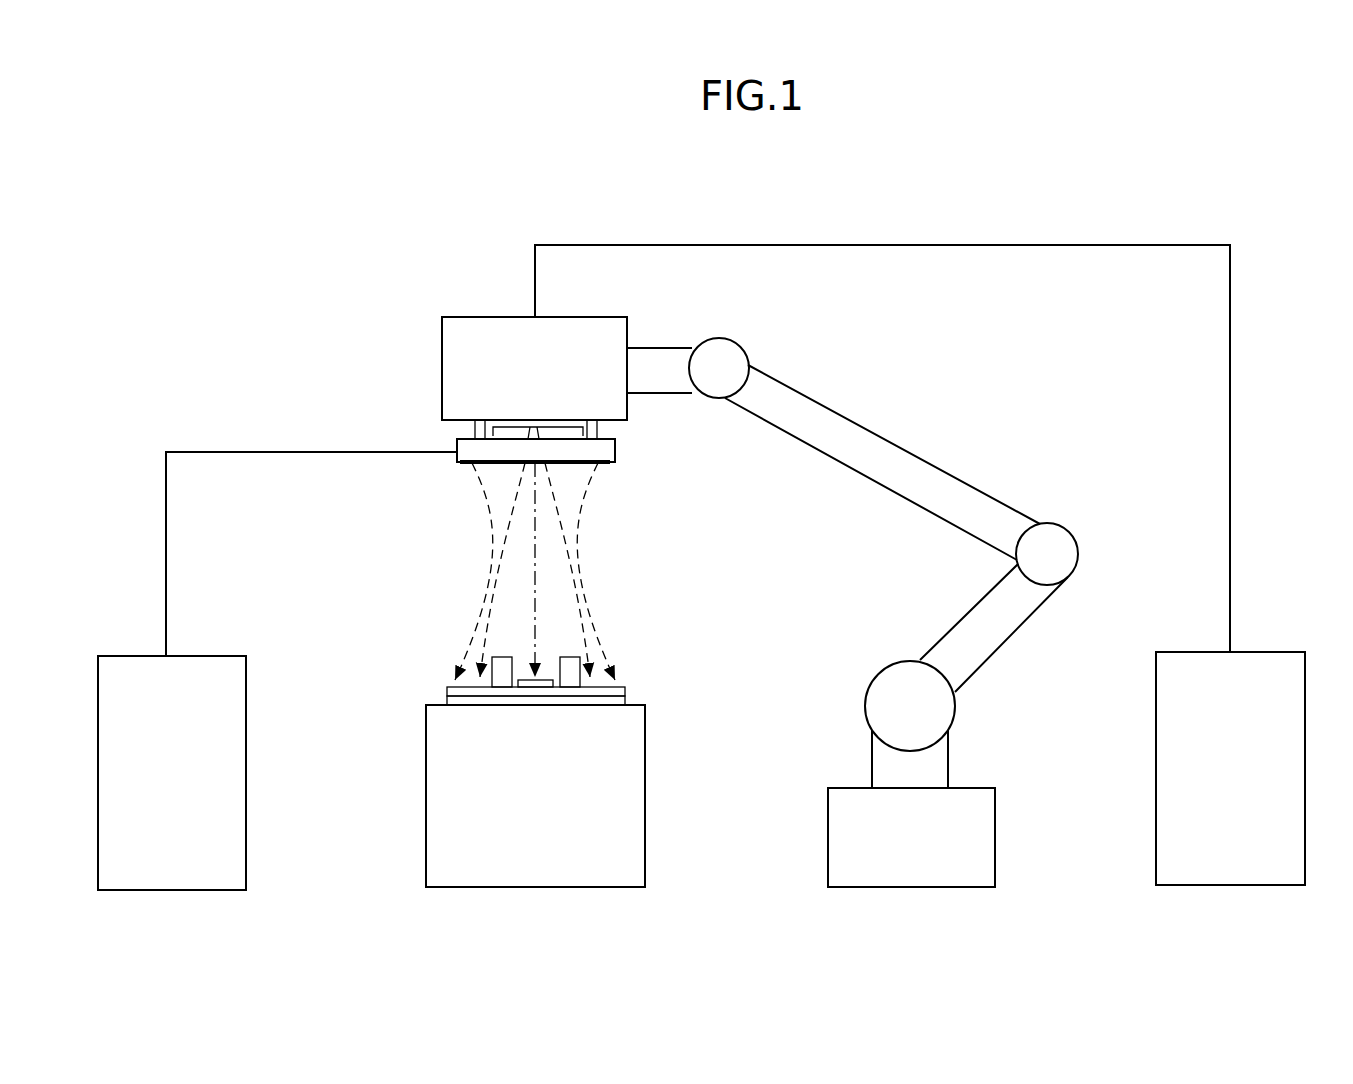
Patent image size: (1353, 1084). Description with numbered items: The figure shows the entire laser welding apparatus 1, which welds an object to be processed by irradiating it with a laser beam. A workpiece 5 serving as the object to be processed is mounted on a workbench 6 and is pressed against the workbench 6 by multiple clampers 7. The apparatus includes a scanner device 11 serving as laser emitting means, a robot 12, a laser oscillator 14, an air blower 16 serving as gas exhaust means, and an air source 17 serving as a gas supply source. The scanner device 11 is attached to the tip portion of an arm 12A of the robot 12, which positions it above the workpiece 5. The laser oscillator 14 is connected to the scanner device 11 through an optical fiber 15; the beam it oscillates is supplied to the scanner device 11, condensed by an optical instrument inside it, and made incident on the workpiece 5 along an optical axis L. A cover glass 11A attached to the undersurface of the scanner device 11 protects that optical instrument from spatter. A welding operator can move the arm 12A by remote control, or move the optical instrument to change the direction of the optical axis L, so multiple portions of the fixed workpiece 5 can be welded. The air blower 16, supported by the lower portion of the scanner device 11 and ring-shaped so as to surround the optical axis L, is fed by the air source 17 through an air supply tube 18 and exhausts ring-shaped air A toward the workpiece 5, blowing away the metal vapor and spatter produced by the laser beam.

The laser welding apparatus 1 is at (342, 218).
The workpiece 5 is at (627, 688).
The workbench 6 is at (645, 790).
The clampers 7 is at (500, 656).
The scanner device 11 is at (442, 332).
The cover glass 11A is at (492, 428).
The robot 12 is at (970, 782).
The arm 12A is at (853, 417).
The laser oscillator 14 is at (1156, 760).
The optical fiber 15 is at (865, 245).
The air blower 16 is at (615, 447).
The air source 17 is at (246, 760).
The air supply tube 18 is at (227, 452).
The air A is at (490, 512).
The optical axis L is at (537, 562).